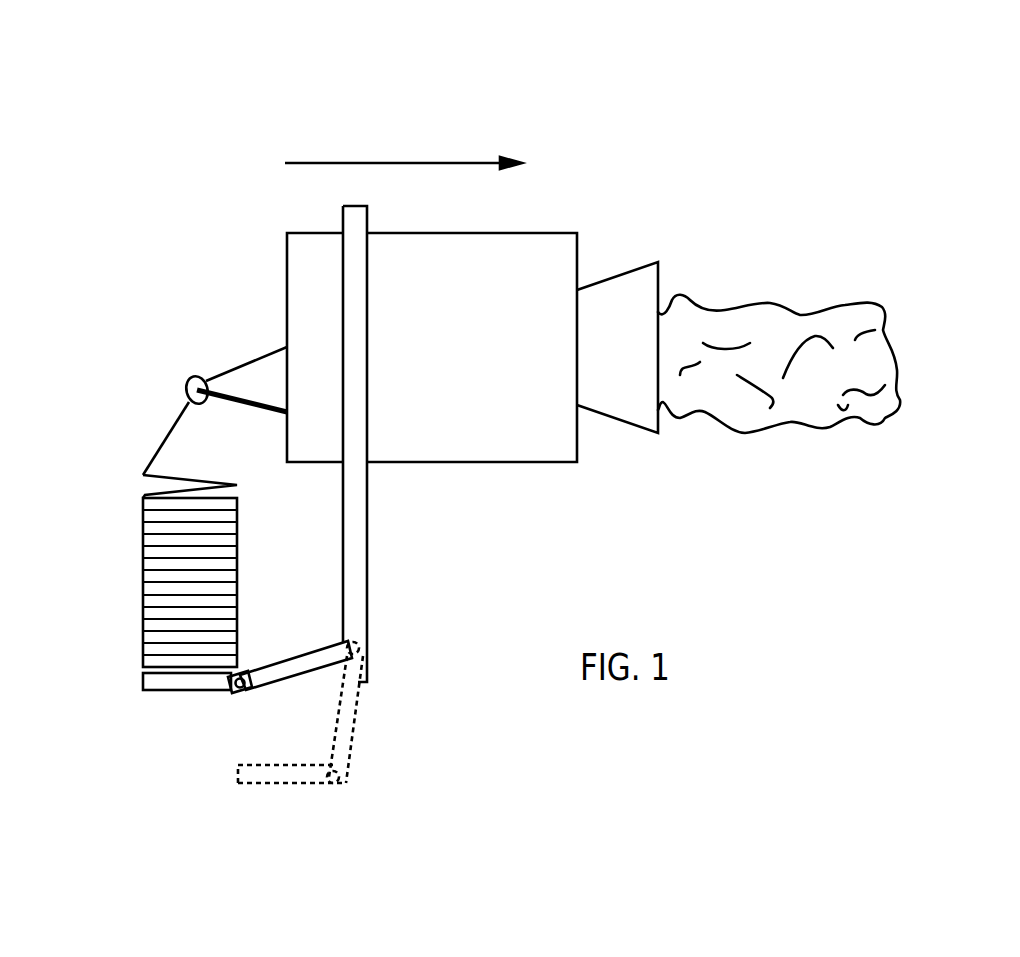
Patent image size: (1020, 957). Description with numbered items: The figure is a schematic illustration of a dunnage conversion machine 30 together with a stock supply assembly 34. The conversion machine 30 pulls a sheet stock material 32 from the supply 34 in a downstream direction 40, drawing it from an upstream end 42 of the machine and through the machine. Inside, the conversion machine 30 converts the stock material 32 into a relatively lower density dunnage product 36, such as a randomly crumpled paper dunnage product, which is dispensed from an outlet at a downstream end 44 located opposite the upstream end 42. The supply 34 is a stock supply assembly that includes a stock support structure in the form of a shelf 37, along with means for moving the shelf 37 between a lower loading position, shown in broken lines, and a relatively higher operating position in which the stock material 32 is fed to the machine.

The dunnage conversion machine 30 is at (635, 130).
The sheet stock material 32 is at (158, 439).
The stock supply assembly 34 is at (135, 603).
The dunnage product 36 is at (798, 400).
The shelf 37 is at (178, 683).
The downstream direction 40 is at (367, 163).
The upstream end 42 is at (235, 257).
The downstream end 44 is at (688, 252).